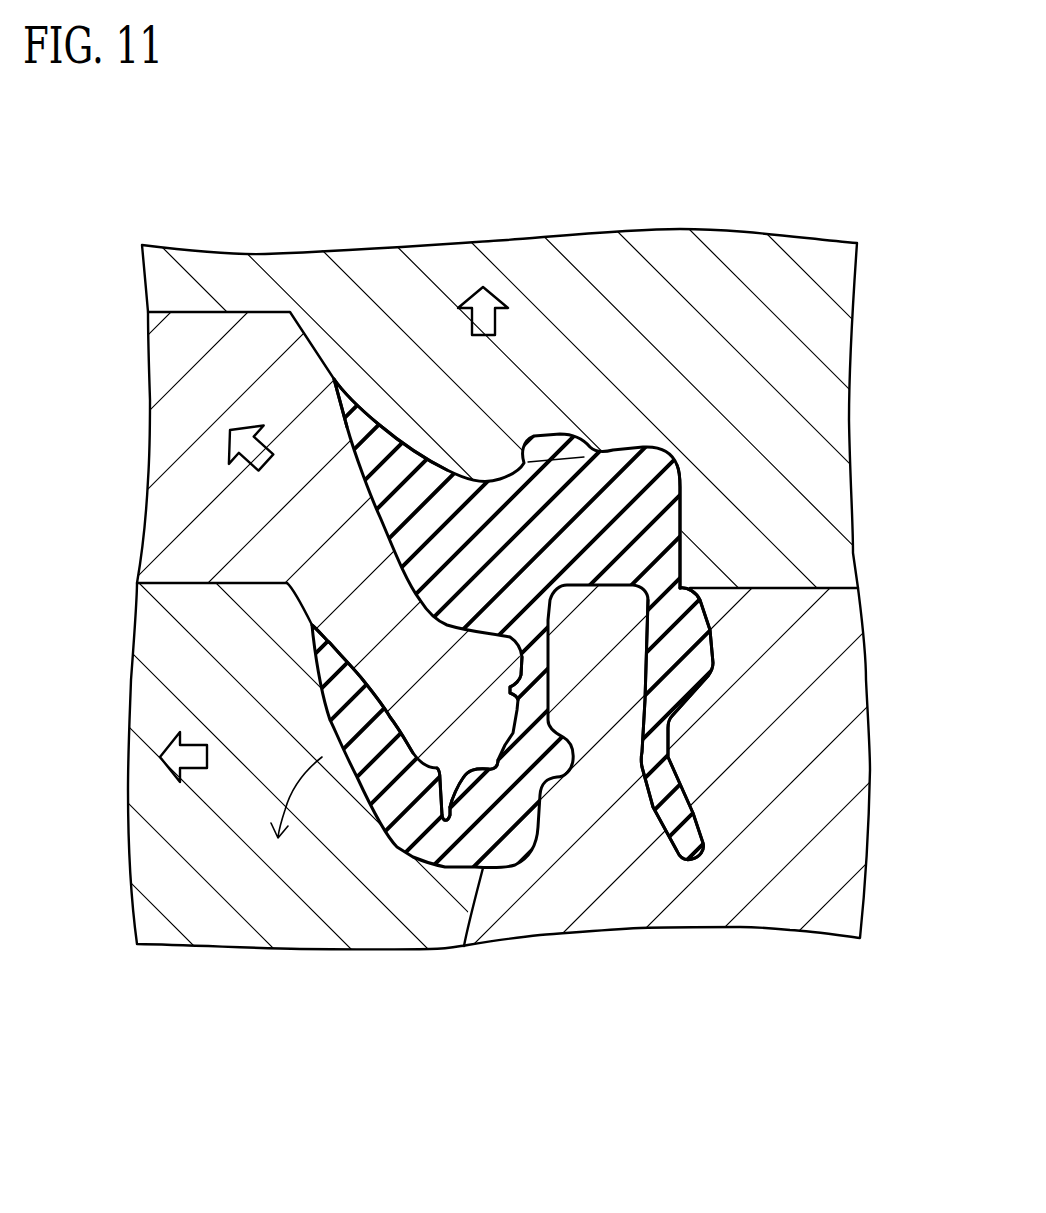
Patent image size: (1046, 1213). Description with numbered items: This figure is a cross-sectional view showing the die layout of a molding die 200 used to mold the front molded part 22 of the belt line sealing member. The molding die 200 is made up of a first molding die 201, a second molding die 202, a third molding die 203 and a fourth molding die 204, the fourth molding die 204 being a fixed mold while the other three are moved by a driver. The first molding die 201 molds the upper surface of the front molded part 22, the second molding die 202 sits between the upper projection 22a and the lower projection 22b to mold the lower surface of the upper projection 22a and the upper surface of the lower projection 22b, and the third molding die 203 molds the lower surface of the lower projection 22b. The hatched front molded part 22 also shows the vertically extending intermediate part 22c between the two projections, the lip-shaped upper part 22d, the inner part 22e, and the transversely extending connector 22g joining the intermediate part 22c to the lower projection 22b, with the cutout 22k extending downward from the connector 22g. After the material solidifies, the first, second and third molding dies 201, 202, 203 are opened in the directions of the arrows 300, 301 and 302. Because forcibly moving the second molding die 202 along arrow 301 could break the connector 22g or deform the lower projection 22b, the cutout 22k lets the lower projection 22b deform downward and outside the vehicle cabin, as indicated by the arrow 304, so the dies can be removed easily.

The molding die 200 is at (678, 197).
The first molding die 201 is at (300, 263).
The second molding die 202 is at (173, 450).
The third molding die 203 is at (293, 923).
The fourth molding die 204 is at (733, 900).
The front molded part 22 is at (375, 534).
The upper projection 22a is at (360, 421).
The lower projection 22b is at (352, 679).
The intermediate part 22c is at (527, 713).
The upper part 22d is at (632, 553).
The inner part 22e is at (660, 724).
The connector 22g is at (419, 858).
The cutout 22k is at (457, 798).
The arrow 300 is at (497, 318).
The arrow 301 is at (266, 440).
The arrow 302 is at (191, 745).
The arrow 304 is at (293, 780).